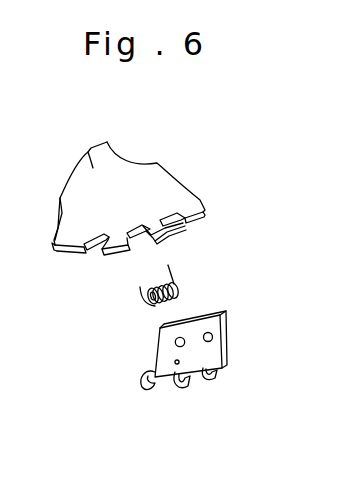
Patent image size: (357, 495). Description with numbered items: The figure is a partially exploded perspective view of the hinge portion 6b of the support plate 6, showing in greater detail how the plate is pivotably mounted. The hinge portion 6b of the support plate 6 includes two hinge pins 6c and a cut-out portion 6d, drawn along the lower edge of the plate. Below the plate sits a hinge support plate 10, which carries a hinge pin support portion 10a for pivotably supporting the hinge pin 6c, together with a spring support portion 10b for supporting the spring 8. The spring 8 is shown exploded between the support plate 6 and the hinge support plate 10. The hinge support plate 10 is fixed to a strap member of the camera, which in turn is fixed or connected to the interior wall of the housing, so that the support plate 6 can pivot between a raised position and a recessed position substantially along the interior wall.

The support plate 6 is at (135, 178).
The hinge portion 6b is at (172, 248).
The hinge pin 6c is at (102, 250).
The cut-out portion 6d is at (144, 232).
The spring 8 is at (178, 293).
The hinge support plate 10 is at (217, 343).
The hinge pin support portion 10a is at (141, 379).
The spring support portion 10b is at (187, 383).